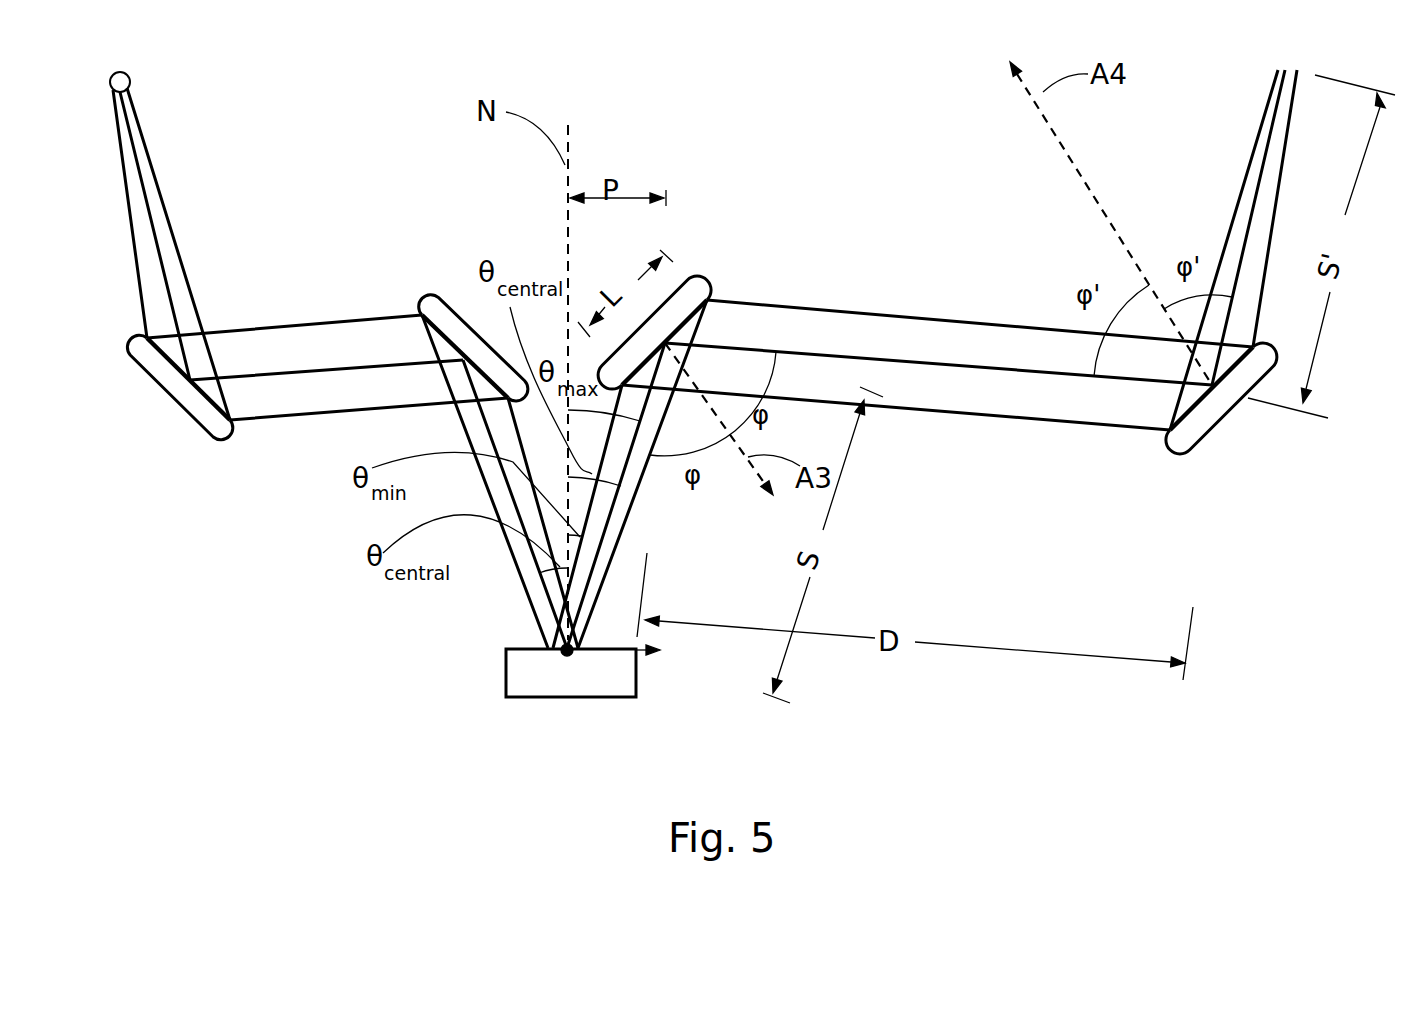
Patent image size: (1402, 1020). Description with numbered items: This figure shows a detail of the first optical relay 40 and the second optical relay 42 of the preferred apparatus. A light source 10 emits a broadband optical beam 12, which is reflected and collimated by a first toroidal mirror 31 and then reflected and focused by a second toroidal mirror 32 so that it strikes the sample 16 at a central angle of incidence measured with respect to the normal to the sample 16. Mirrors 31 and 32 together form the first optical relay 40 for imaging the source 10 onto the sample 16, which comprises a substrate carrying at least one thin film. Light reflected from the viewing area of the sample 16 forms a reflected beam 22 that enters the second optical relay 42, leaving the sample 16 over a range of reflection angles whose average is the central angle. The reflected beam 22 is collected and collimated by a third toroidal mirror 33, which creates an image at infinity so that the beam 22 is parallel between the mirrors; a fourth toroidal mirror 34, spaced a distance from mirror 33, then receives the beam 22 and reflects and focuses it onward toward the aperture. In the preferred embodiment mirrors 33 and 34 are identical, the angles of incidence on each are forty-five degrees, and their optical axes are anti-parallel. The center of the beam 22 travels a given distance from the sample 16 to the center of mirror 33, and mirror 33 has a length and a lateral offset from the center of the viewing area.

The light source 10 is at (128, 74).
The broadband optical beam 12 is at (303, 415).
The sample 16 is at (636, 667).
The reflected beam 22 is at (975, 322).
The first toroidal mirror 31 is at (178, 393).
The second toroidal mirror 32 is at (450, 312).
The third toroidal mirror 33 is at (695, 293).
The fourth toroidal mirror 34 is at (1230, 440).
The first optical relay 40 is at (283, 232).
The second optical relay 42 is at (856, 180).